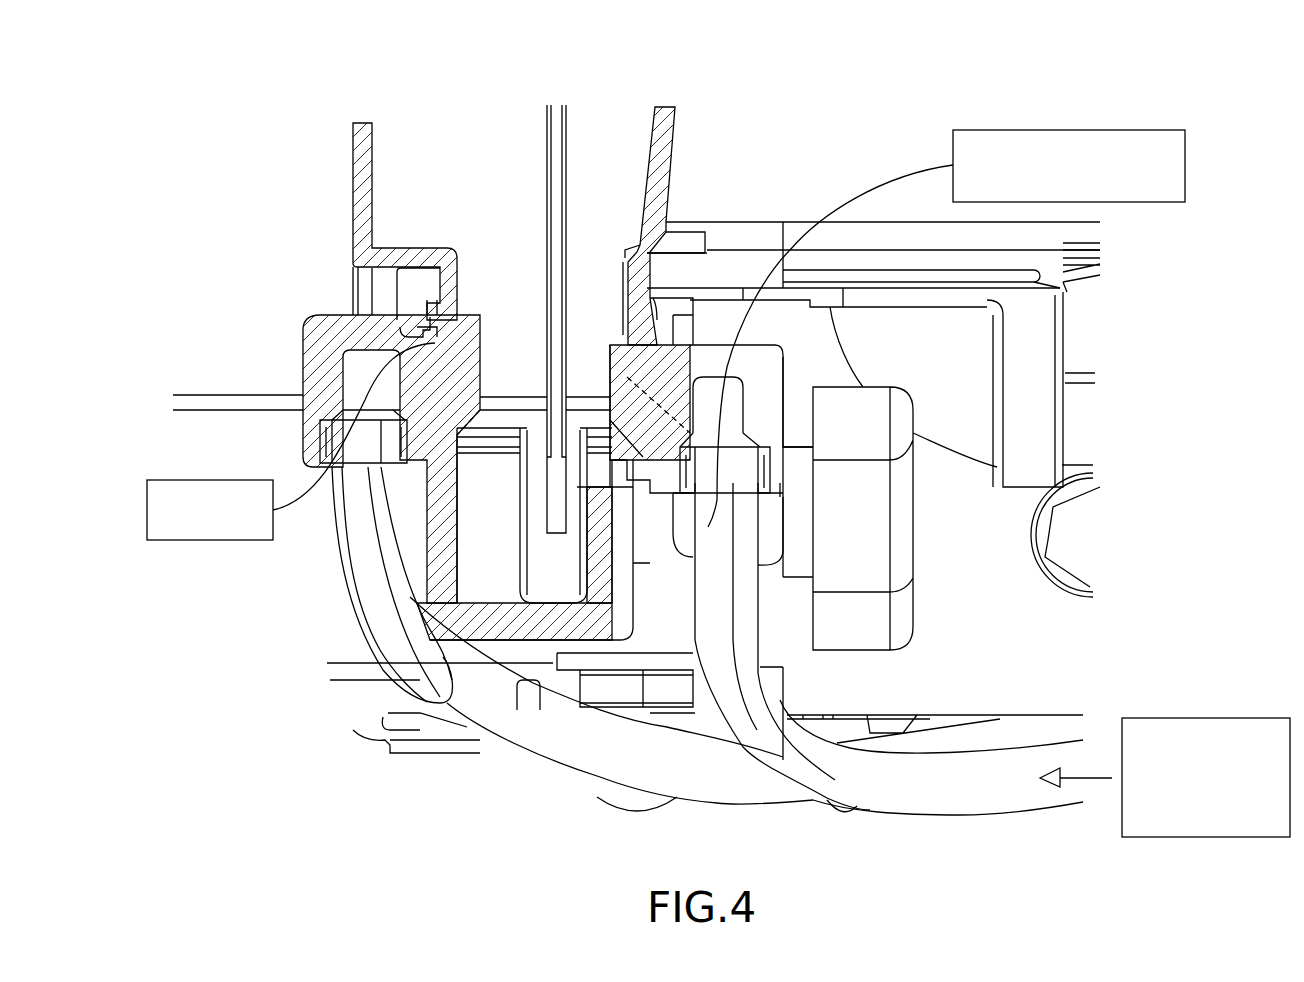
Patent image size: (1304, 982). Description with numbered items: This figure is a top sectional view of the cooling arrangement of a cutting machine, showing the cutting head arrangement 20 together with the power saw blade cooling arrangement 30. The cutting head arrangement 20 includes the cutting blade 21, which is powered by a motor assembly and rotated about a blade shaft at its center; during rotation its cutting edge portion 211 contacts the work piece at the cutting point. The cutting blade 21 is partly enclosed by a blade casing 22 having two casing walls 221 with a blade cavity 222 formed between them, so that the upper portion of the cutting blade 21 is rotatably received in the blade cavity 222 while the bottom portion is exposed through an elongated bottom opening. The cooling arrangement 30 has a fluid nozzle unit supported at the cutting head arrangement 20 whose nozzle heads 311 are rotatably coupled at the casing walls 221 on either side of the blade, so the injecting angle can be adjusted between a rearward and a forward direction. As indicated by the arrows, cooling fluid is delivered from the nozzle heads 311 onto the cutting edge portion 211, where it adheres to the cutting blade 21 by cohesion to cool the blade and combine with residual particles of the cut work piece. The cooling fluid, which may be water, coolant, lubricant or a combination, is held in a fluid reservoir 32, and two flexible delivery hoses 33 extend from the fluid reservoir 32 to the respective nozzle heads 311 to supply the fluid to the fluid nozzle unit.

The cutting head arrangement 20 is at (703, 97).
The cutting blade 21 is at (558, 163).
The cutting edge portion 211 is at (540, 545).
The blade casing 22 is at (240, 198).
The casing walls 221 is at (363, 174).
The blade cavity 222 is at (518, 142).
The power saw blade cooling arrangement 30 is at (1003, 880).
The nozzle heads 311 is at (540, 480).
The fluid reservoir 32 is at (1165, 777).
The flexible delivery hose 33 is at (713, 777).